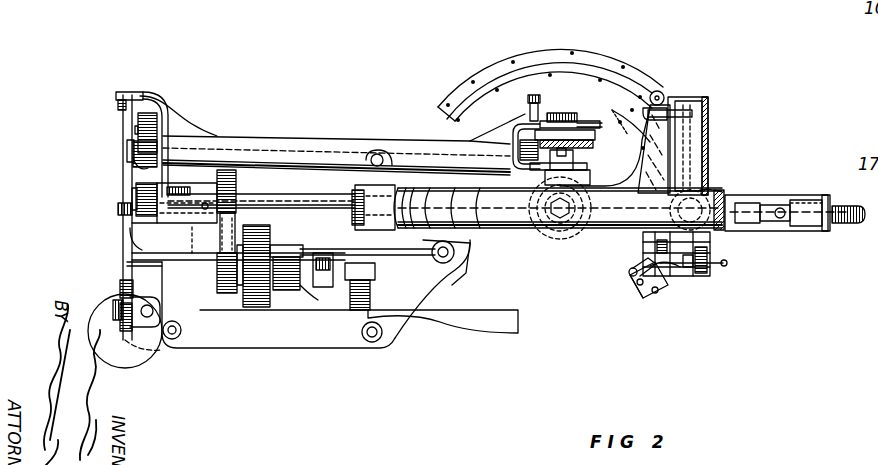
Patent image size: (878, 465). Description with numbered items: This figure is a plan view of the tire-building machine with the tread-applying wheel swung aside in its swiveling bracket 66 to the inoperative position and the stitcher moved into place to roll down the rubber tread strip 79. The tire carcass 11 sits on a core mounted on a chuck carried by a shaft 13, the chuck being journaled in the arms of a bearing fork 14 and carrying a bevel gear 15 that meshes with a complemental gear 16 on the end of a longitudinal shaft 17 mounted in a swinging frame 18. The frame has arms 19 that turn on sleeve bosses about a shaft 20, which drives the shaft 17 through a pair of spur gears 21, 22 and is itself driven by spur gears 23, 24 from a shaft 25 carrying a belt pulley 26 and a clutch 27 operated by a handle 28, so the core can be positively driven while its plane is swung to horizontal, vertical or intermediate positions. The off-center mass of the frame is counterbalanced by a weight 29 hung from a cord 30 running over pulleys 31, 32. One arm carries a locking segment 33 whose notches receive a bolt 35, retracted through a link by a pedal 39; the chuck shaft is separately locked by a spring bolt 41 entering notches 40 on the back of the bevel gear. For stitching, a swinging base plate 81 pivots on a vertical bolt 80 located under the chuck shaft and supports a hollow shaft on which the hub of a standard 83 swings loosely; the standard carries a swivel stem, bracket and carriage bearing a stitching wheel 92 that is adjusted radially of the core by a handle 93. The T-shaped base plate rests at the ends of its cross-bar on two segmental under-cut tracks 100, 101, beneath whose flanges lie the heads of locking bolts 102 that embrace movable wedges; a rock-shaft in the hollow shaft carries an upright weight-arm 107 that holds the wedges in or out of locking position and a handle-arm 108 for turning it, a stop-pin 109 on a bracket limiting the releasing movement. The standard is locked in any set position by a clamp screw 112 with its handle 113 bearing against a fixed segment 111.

The tire carcass 11 is at (597, 226).
The shaft 13 is at (567, 150).
The bearing fork 14 is at (588, 123).
The bevel gear 15 is at (585, 142).
The complemental gear 16 is at (530, 176).
The longitudinal shaft 17 is at (138, 148).
The swinging frame 18 is at (268, 137).
The arms 19 is at (180, 178).
The shaft 20 is at (295, 194).
The spur gear 21 is at (134, 192).
The spur gear 22 is at (146, 125).
The spur gear 23 is at (228, 170).
The spur gear 24 is at (222, 295).
The shaft 25 is at (338, 295).
The belt pulley 26 is at (257, 310).
The clutch 27 is at (284, 292).
The handle 28 is at (310, 300).
The weight 29 is at (137, 352).
The cord 30 is at (125, 265).
The pulley 31 is at (128, 292).
The pulley 32 is at (120, 208).
The locking segment 33 is at (363, 262).
The bolt 35 is at (365, 345).
The pedal 39 is at (492, 318).
The notches 40 is at (563, 127).
The spring bolt 41 is at (535, 96).
The swiveling bracket 66 is at (877, 100).
The rubber tread strip 79 is at (722, 193).
The vertical bolt 80 is at (556, 236).
The swinging base plate 81 is at (658, 173).
The standard 83 is at (705, 160).
The stitching wheel 92 is at (756, 220).
The handle 93 is at (854, 226).
The segmental under-cut track 100 is at (482, 84).
The segmental under-cut track 101 is at (658, 92).
The locking bolt 102 is at (660, 108).
The weight-arm 107 is at (672, 112).
The handle-arm 108 is at (628, 278).
The stop-pin 109 is at (650, 258).
The fixed segment 111 is at (710, 246).
The clamp screw 112 is at (710, 278).
The handle 113 is at (728, 265).